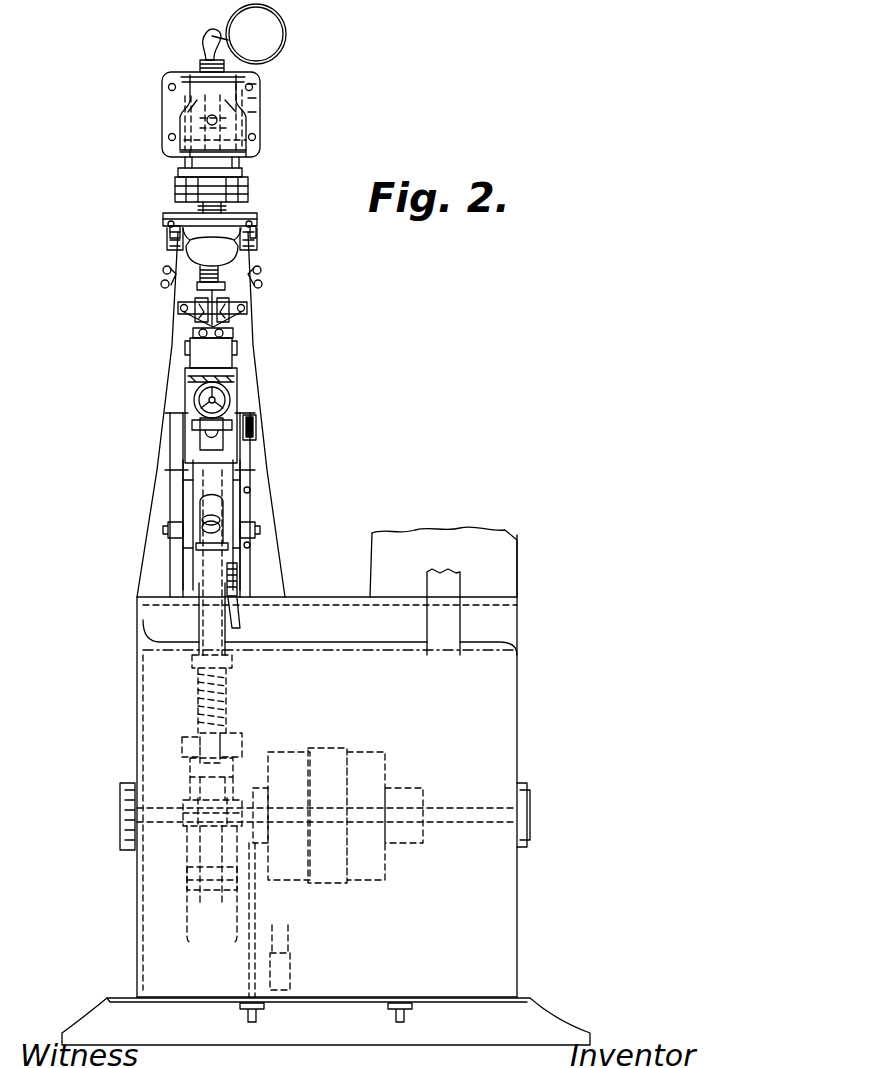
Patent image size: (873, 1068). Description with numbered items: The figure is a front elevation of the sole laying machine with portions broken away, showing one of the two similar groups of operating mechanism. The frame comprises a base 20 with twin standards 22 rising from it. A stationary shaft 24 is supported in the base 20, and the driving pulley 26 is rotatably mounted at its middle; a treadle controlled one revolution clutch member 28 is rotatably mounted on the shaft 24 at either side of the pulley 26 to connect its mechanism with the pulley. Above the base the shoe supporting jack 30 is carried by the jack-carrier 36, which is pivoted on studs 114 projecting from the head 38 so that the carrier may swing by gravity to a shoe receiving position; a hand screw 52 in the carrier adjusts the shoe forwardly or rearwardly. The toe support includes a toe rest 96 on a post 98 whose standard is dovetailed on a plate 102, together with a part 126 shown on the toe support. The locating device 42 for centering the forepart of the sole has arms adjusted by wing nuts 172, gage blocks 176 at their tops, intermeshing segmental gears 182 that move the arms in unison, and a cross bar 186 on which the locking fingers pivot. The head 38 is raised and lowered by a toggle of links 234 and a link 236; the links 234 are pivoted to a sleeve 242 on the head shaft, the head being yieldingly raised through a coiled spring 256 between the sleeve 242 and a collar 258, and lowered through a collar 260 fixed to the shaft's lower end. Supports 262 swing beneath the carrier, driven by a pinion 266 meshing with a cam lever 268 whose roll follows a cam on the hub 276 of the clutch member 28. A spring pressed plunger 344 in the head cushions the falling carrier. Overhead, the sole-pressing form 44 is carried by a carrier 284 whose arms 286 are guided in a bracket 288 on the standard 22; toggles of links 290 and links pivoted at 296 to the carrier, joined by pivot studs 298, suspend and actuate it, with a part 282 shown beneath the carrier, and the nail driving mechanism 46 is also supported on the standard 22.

The base 20 is at (495, 953).
The standards 22 is at (158, 484).
The stationary shaft 24 is at (531, 815).
The driving pulley 26 is at (323, 752).
The one revolution clutch member 28 is at (285, 880).
The shoe supporting jack 30 is at (210, 353).
The jack-carrier 36 is at (245, 446).
The head 38 is at (224, 523).
The locating device 42 is at (153, 225).
The sole-pressing form 44 is at (256, 221).
The nail driving mechanism 46 is at (199, 62).
The hand screw 52 is at (231, 399).
The toe rest 96 is at (226, 269).
The post 98 is at (205, 280).
The plate 102 is at (195, 379).
The pivot studs 114 is at (168, 536).
The cup 126 is at (214, 233).
The wing nut 172 is at (166, 279).
The gage block 176 is at (166, 236).
The segmental gears 182 is at (183, 311).
The cross bar 186 is at (216, 336).
The links 234 is at (200, 781).
The link 236 is at (210, 850).
The sleeve 242 is at (227, 745).
The coiled spring 256 is at (200, 712).
The collar 258 is at (234, 661).
The collar 260 is at (190, 768).
The supports 262 is at (184, 511).
The pinion 266 is at (237, 573).
The cam lever 268 is at (240, 622).
The hub 276 is at (250, 786).
The nut 282 is at (175, 186).
The carrier 284 is at (243, 173).
The arms 286 is at (238, 131).
The bracket 288 is at (228, 116).
The link 290 is at (176, 107).
The pivotal connection 296 is at (188, 156).
The pivot studs 298 is at (200, 121).
The spring pressed plunger 344 is at (200, 432).